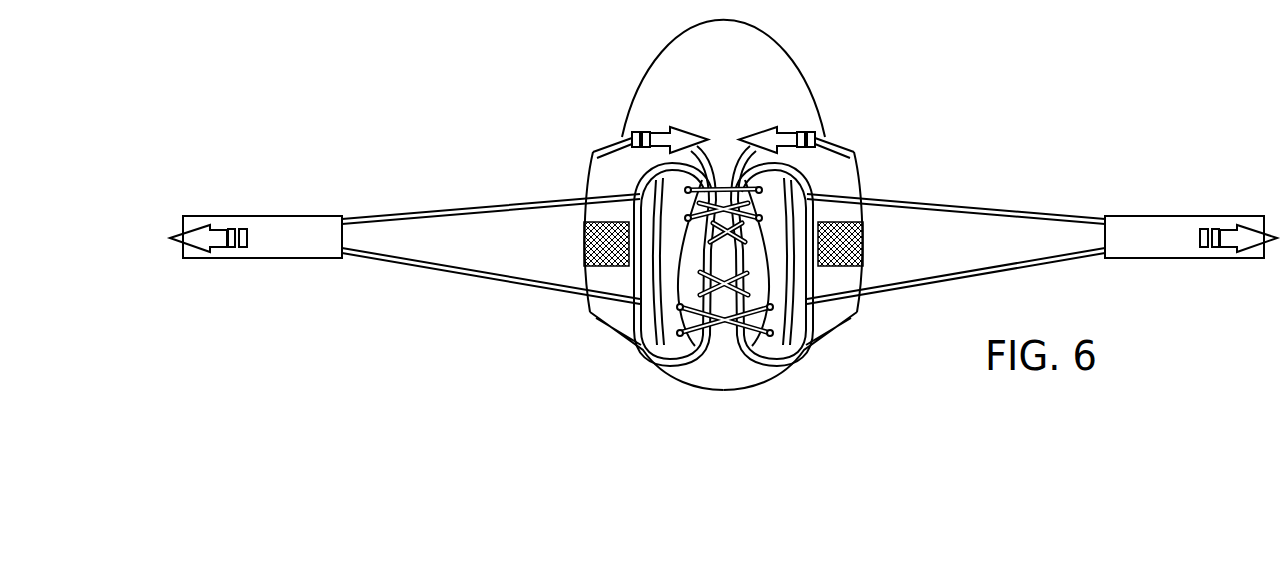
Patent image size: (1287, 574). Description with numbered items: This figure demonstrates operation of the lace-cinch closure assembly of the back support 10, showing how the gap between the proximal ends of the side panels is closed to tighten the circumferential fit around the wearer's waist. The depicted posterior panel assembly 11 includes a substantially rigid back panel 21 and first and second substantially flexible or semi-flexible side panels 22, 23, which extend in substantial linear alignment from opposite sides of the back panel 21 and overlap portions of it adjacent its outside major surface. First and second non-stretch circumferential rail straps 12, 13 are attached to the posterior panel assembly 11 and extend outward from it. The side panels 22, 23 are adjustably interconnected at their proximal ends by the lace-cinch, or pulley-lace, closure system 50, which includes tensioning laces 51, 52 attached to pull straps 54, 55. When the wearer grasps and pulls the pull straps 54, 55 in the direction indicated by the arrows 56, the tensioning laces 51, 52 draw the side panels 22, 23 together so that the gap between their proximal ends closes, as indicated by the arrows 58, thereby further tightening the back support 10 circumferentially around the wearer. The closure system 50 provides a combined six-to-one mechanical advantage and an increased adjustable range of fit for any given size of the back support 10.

The back support 10 is at (893, 89).
The posterior panel assembly 11 is at (607, 142).
The first non-stretch circumferential rail strap 12 is at (867, 238).
The second non-stretch circumferential rail strap 13 is at (582, 238).
The back panel 21 is at (772, 56).
The first side panel 22 is at (864, 173).
The second side panel 23 is at (583, 182).
The lace-cinch closure system 50 is at (727, 151).
The tensioning lace 51 is at (492, 272).
The tensioning lace 52 is at (1015, 262).
The pull strap 54 is at (325, 233).
The pull strap 55 is at (1173, 230).
The arrows 56 is at (197, 222).
The arrows 58 is at (706, 133).